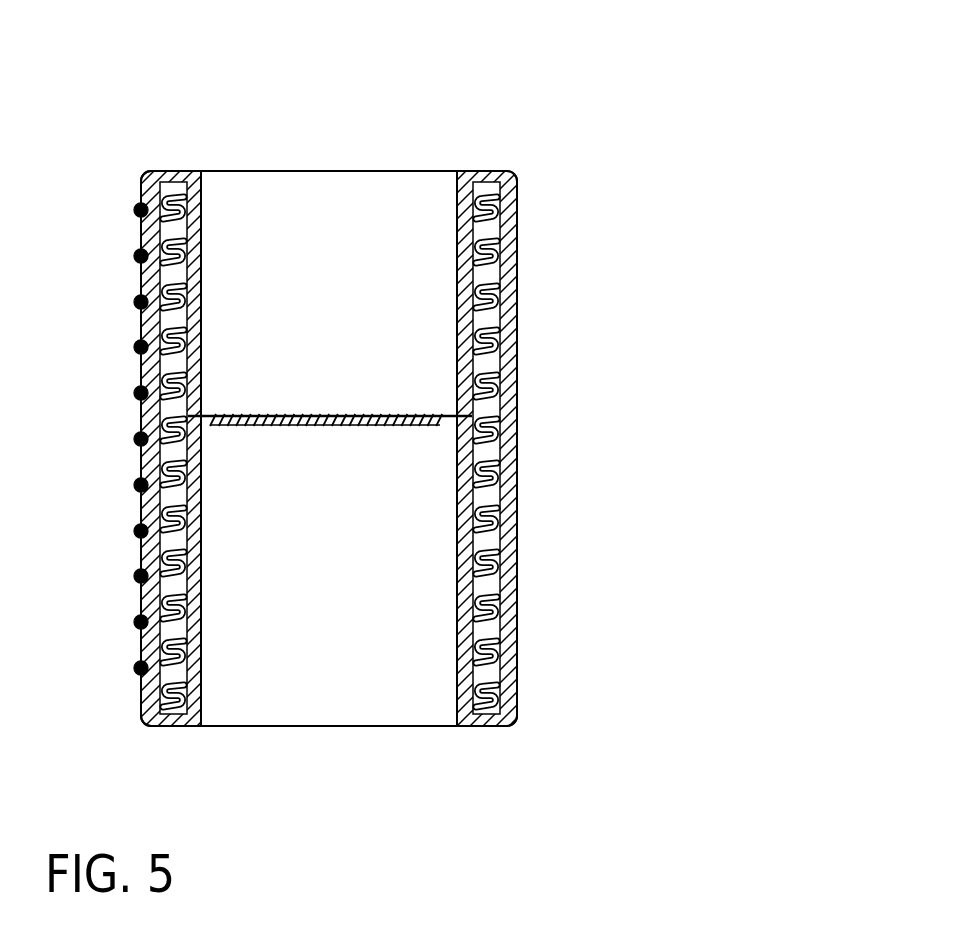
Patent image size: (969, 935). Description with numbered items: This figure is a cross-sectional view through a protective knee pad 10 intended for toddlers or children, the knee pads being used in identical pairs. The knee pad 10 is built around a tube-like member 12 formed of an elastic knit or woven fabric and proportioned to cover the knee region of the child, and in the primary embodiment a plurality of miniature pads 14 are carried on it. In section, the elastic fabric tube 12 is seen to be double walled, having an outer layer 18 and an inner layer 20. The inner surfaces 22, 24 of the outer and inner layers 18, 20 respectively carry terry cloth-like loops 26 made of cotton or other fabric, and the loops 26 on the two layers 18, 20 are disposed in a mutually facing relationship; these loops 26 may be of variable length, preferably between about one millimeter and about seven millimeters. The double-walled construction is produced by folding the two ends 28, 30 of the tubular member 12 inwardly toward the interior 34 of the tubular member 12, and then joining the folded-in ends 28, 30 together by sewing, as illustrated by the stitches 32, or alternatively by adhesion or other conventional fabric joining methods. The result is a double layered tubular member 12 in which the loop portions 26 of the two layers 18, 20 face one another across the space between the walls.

The protective knee pad 10 is at (473, 60).
The tube-like member 12 is at (378, 197).
The miniature pads 14 is at (136, 668).
The outer layer 18 is at (147, 184).
The inner layer 20 is at (201, 185).
The inner surface of outer layer 22 is at (141, 600).
The inner surface of inner layer 24 is at (188, 669).
The terry cloth-like loops 26 is at (175, 303).
The end of tubular member 28 is at (428, 420).
The end of tubular member 30 is at (487, 468).
The stitches 32 is at (386, 412).
The interior of tubular member 34 is at (382, 703).